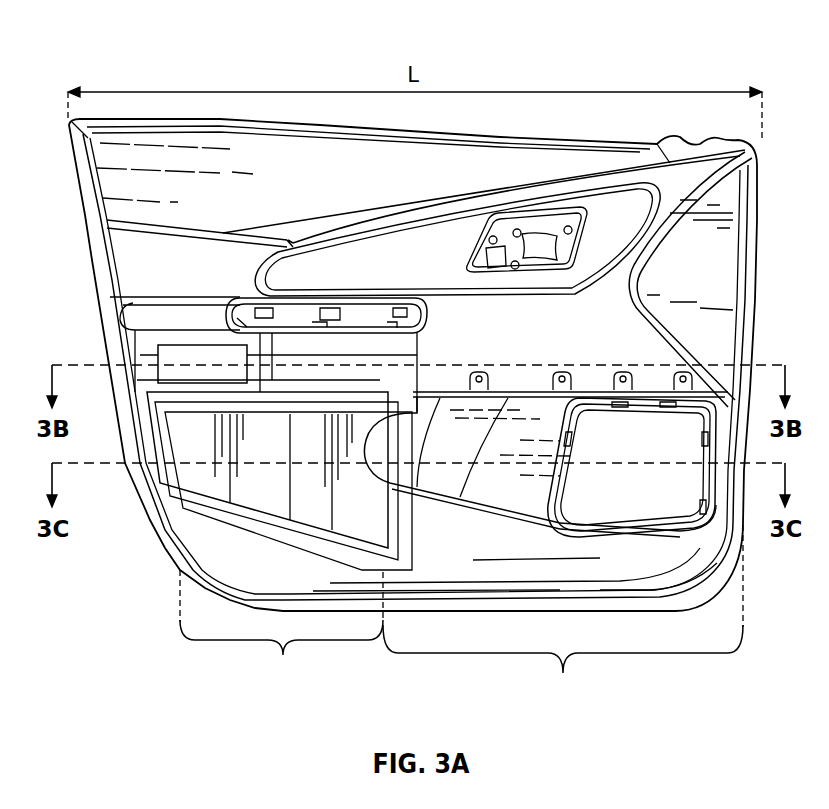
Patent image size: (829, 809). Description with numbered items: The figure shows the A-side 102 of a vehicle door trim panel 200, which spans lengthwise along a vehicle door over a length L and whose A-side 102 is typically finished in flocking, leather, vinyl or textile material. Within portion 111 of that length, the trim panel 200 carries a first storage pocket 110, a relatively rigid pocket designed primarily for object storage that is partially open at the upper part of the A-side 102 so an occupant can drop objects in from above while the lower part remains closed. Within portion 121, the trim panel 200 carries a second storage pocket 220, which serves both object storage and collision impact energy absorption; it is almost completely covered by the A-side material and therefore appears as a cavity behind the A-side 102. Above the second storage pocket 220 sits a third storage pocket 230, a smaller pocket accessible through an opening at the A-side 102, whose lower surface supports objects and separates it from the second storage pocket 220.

The vehicle door trim panel 200 is at (700, 59).
The A-side 102 is at (270, 147).
The third storage pocket 230 is at (180, 333).
The first storage pocket 110 is at (433, 448).
The second storage pocket 220 is at (343, 515).
The portion 121 is at (281, 629).
The portion 111 is at (563, 617).